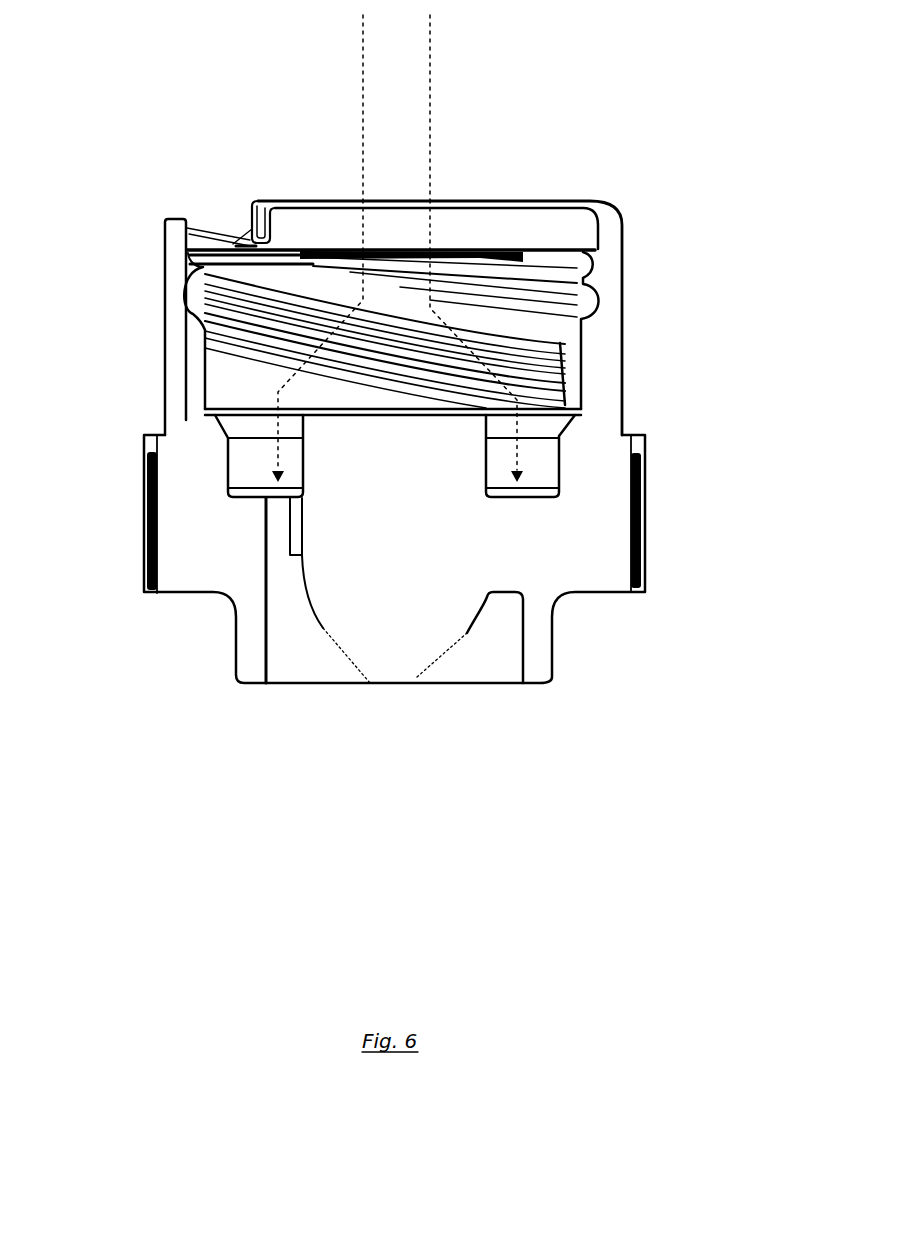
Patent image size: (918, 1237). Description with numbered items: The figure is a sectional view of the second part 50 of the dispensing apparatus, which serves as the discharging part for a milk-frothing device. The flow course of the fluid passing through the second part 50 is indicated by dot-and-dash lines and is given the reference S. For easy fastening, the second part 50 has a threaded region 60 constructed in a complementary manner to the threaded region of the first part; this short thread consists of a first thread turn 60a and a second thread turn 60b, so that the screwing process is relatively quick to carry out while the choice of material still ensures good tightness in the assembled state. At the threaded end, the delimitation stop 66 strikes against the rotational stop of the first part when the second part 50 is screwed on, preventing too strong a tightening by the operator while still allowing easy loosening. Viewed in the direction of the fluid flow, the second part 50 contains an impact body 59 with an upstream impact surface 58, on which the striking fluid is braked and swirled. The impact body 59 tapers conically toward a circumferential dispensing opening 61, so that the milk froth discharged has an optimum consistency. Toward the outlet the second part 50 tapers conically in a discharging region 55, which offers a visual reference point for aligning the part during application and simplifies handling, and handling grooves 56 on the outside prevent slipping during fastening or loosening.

The second part 50 is at (258, 145).
The flow course S is at (432, 149).
The delimitation stop 66 is at (250, 240).
The threaded region 60 is at (417, 351).
The first thread turn 60a is at (572, 294).
The second thread turn 60b is at (547, 390).
The impact surface 58 is at (353, 400).
The discharging region 55 is at (217, 683).
The handling grooves 56 is at (633, 533).
The impact body 59 is at (364, 655).
The circumferential dispensing opening 61 is at (479, 658).